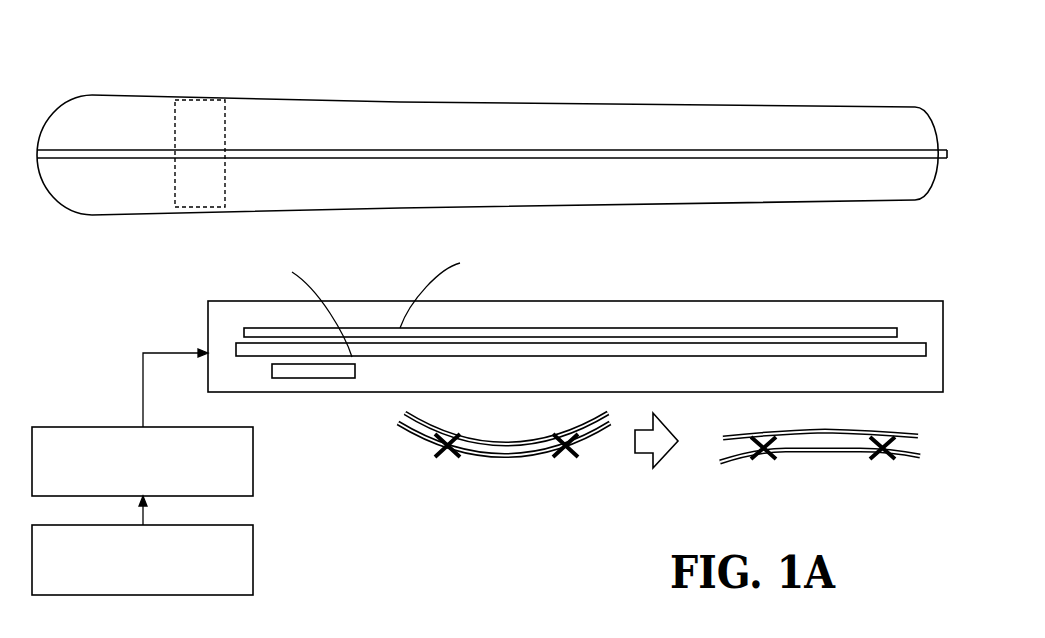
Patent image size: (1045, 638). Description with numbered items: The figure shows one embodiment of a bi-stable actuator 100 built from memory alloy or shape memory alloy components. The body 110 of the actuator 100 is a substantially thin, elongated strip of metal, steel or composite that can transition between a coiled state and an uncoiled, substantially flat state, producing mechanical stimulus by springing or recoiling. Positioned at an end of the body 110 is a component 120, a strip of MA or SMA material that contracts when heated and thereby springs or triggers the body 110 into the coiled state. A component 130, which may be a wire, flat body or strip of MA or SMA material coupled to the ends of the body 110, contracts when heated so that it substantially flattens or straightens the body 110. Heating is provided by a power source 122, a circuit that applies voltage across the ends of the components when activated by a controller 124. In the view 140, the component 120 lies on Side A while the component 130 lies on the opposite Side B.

The actuator 100 is at (730, 72).
The body 110 is at (110, 110).
The component 120 is at (200, 100).
The component 130 is at (137, 158).
The view 140 is at (798, 301).
The power source 122 is at (253, 460).
The controller 124 is at (253, 557).